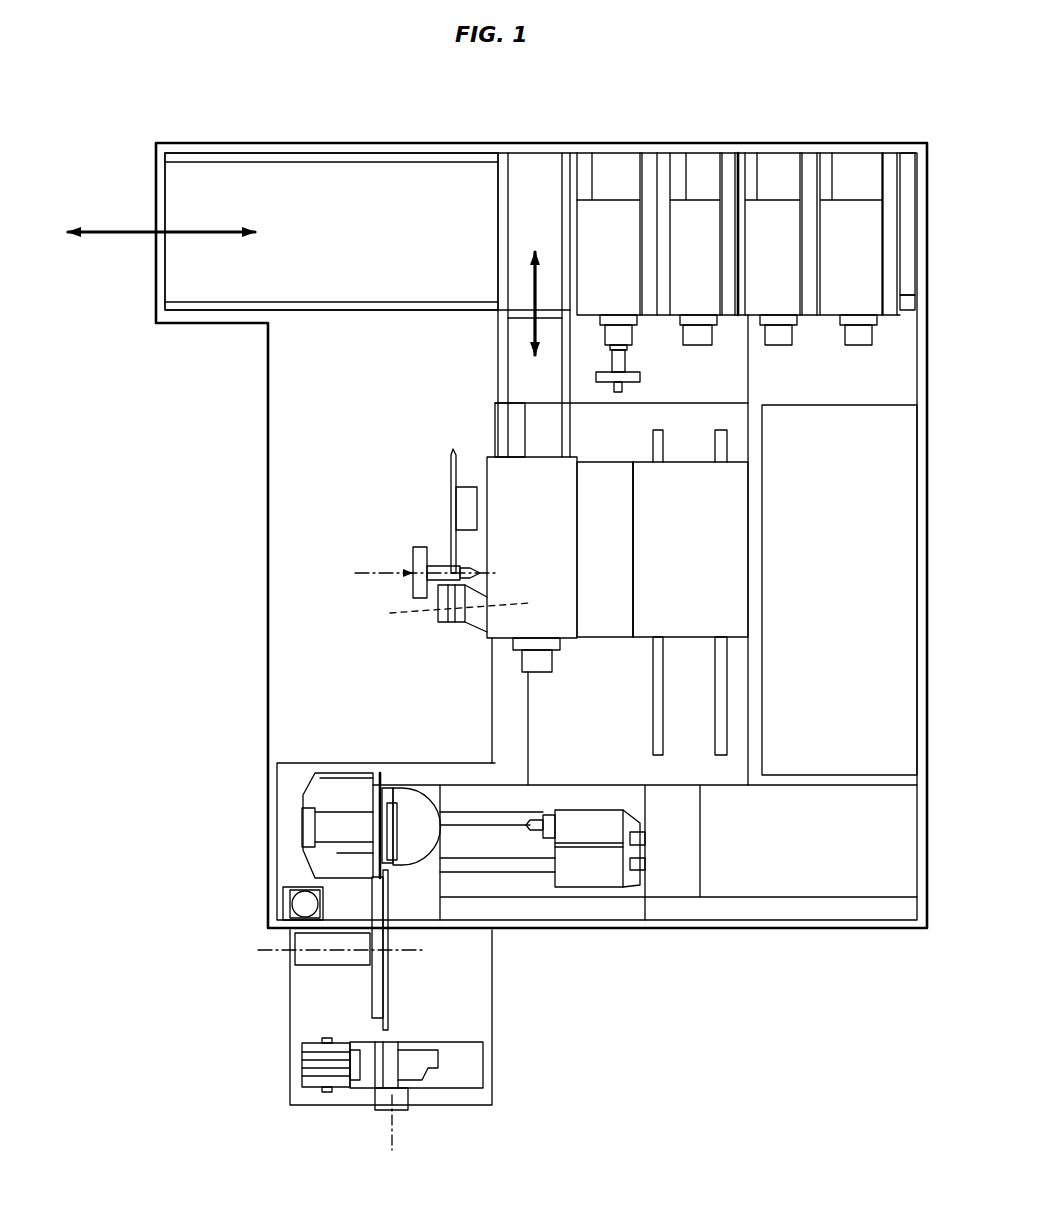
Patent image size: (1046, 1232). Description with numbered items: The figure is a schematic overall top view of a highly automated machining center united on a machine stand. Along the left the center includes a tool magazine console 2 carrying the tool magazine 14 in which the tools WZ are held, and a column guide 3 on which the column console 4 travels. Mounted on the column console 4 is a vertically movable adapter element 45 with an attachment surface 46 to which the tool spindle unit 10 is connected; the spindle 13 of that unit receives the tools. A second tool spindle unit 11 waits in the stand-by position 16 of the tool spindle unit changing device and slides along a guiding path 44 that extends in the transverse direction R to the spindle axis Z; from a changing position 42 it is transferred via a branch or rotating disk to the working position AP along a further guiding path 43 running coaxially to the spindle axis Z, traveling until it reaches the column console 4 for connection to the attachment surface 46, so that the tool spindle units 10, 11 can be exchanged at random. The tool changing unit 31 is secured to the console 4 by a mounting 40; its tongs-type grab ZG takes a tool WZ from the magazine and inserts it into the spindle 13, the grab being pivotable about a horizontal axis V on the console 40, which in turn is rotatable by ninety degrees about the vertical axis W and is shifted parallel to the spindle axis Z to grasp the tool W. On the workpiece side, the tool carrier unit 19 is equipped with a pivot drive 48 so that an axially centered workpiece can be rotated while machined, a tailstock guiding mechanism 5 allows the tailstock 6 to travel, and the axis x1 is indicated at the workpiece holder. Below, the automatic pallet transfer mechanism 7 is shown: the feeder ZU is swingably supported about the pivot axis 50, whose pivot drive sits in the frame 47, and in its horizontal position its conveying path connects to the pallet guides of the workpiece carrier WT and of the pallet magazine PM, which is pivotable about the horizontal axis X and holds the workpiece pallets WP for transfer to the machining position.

The guiding path 44 is at (272, 160).
The changing position 42 is at (538, 148).
The guiding path 43 is at (520, 357).
The stand-by position 16 is at (618, 142).
The tool spindle unit 11 is at (780, 157).
The tool spindle unit 10 is at (532, 610).
The spindle 13 is at (542, 672).
The adapter element 45 is at (598, 475).
The column console 4 is at (712, 480).
The attachment surface 46 is at (590, 595).
The column guide 3 is at (715, 708).
The tool magazine 14 is at (450, 470).
The tool magazine console 2 is at (468, 485).
The tool changing unit 31 is at (427, 527).
The mounting 40 is at (487, 622).
The tool carrier unit 19 is at (315, 790).
The pivot drive 48 is at (378, 773).
The pivot axis 50 is at (405, 950).
The tailstock guiding mechanism 5 is at (523, 865).
The tailstock 6 is at (605, 878).
The automatic pallet transfer mechanism 7 is at (283, 1095).
The frame 47 is at (295, 958).
The transverse direction R is at (112, 232).
The spindle axis Z is at (533, 300).
The vertical axis W is at (640, 378).
The working position AP is at (515, 420).
The tool WZ is at (413, 553).
The x1 axis x1 is at (375, 575).
The horizontal axis V is at (451, 614).
The tongs-type grab ZG is at (438, 622).
The workpiece carrier WT is at (403, 752).
The workpiece pallet WP is at (318, 1043).
The feeder ZU is at (388, 1005).
The horizontal axis X is at (392, 1140).
The pallet magazine PM is at (413, 1112).